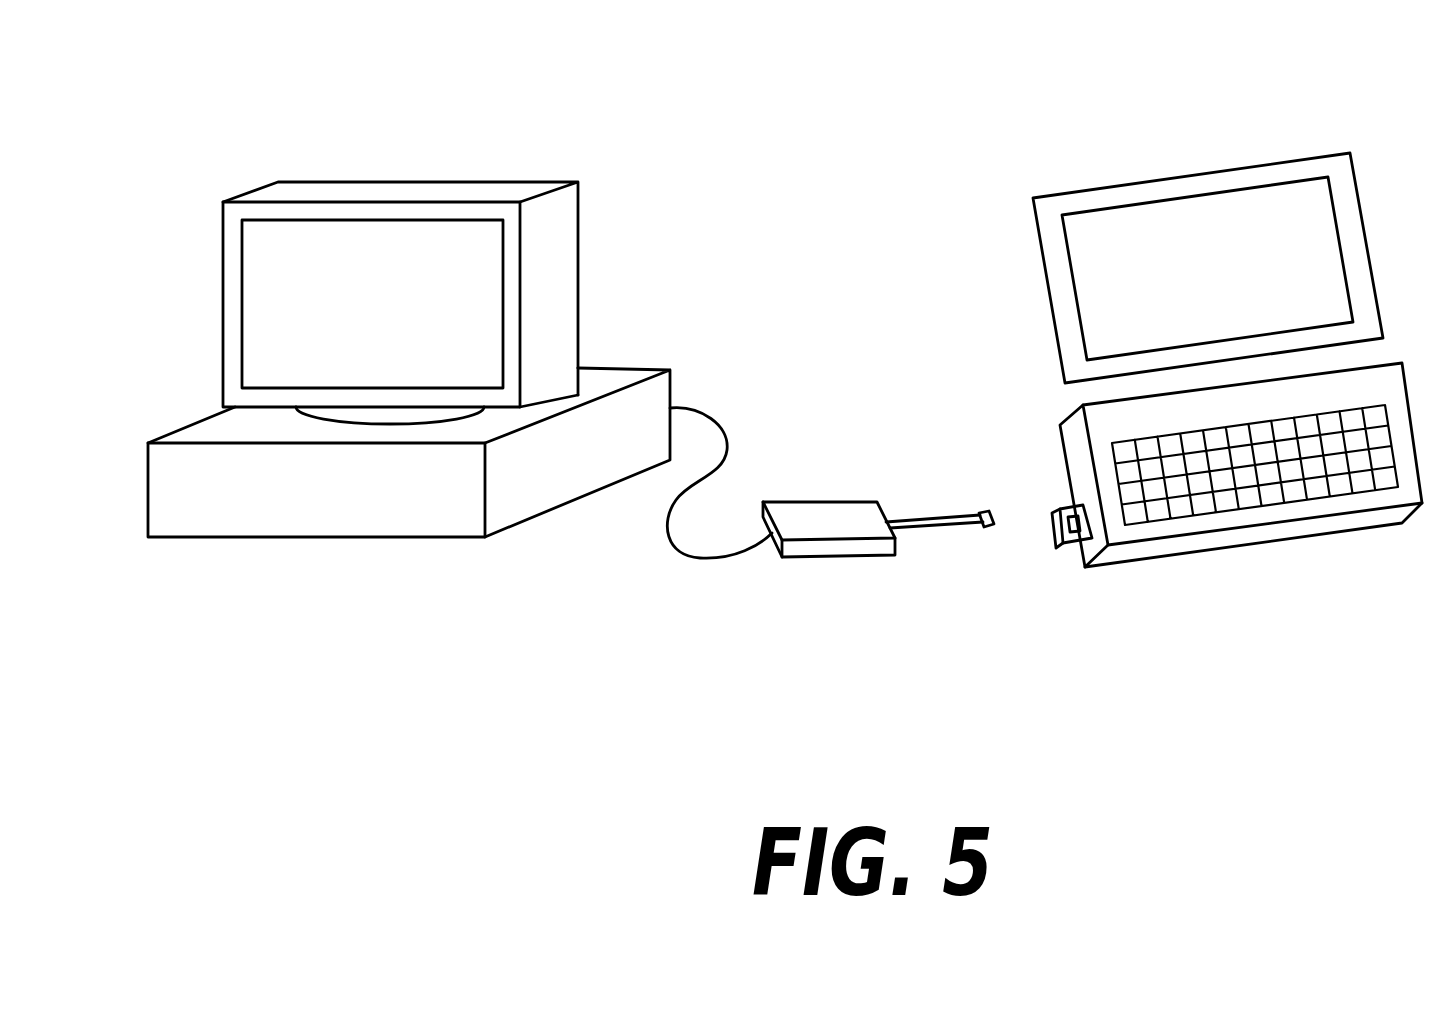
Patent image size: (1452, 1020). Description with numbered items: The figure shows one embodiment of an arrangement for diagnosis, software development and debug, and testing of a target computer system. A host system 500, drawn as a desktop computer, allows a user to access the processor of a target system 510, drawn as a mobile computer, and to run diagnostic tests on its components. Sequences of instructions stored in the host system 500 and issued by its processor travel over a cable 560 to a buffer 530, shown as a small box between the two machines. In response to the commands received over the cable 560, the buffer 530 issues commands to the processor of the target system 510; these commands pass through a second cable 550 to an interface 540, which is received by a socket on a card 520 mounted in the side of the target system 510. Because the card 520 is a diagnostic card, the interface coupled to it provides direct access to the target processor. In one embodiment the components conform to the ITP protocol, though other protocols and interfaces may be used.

The host system 500 is at (407, 158).
The target system 510 is at (1223, 150).
The card 520 is at (1065, 565).
The buffer 530 is at (800, 573).
The interface 540 is at (982, 512).
The cable 550 is at (938, 538).
The cable 560 is at (725, 417).